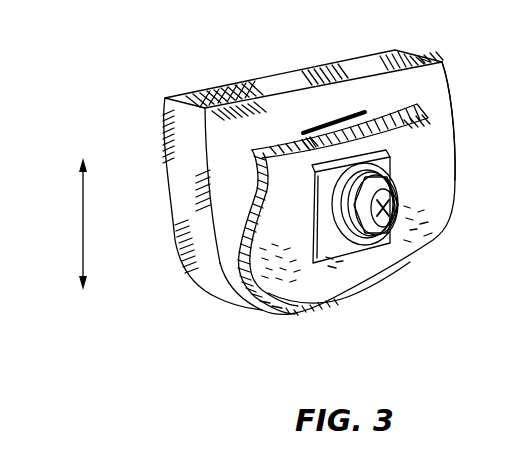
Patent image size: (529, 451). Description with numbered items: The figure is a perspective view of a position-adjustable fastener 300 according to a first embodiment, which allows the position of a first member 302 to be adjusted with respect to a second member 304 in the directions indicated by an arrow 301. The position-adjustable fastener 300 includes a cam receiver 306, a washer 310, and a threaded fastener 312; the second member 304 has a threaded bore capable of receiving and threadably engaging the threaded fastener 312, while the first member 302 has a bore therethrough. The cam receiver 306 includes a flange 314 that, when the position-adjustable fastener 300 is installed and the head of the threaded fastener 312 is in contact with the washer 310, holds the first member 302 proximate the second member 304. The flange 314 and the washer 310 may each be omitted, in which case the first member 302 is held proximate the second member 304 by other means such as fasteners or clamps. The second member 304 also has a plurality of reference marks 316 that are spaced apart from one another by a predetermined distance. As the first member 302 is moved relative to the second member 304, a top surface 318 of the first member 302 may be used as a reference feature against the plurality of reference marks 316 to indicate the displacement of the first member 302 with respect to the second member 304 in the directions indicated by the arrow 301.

The position-adjustable fastener 300 is at (155, 325).
The arrow 301 is at (82, 240).
The first member 302 is at (428, 202).
The second member 304 is at (447, 103).
The cam receiver 306 is at (312, 266).
The washer 310 is at (391, 180).
The threaded fastener 312 is at (384, 210).
The flange 314 is at (271, 146).
The reference marks 316 is at (334, 118).
The top surface 318 is at (287, 146).